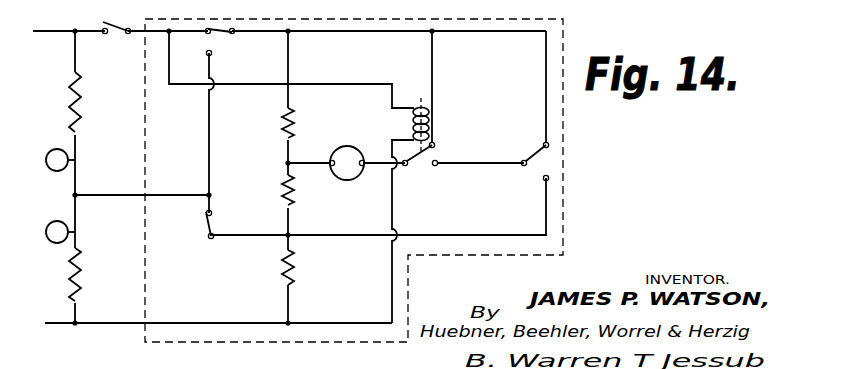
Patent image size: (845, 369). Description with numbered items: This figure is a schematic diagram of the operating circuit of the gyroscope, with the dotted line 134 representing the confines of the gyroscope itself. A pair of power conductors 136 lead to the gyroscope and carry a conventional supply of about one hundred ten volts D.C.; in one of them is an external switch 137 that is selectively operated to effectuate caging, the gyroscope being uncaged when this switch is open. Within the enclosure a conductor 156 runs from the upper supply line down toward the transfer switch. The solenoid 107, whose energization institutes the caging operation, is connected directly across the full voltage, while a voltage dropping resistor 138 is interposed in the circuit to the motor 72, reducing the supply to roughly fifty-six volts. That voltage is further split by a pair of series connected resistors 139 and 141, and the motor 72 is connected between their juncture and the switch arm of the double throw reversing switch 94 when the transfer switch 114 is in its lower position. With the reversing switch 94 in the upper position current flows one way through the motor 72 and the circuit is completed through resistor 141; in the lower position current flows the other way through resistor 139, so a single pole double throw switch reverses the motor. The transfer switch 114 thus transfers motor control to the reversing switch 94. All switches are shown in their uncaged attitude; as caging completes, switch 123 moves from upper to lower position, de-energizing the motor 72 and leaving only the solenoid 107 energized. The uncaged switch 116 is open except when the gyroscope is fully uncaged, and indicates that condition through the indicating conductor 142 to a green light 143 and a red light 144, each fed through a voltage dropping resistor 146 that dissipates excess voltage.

The power conductors 136 is at (86, 29).
The external switch 137 is at (126, 27).
The switch 123 is at (232, 28).
The conductor 156 is at (416, 10).
The dotted line 134 is at (563, 37).
The voltage dropping resistors 146 is at (80, 117).
The green light 143 is at (50, 150).
The red light 144 is at (47, 223).
The indicating conductor 142 is at (167, 193).
The uncaged microswitch 116 is at (205, 226).
The resistor 139 is at (281, 127).
The resistor 141 is at (281, 187).
The voltage dropping resistor 138 is at (281, 272).
The motor 72 is at (351, 147).
The solenoid 107 is at (430, 122).
The transfer microswitch 114 is at (410, 166).
The reversing microswitch 94 is at (540, 150).